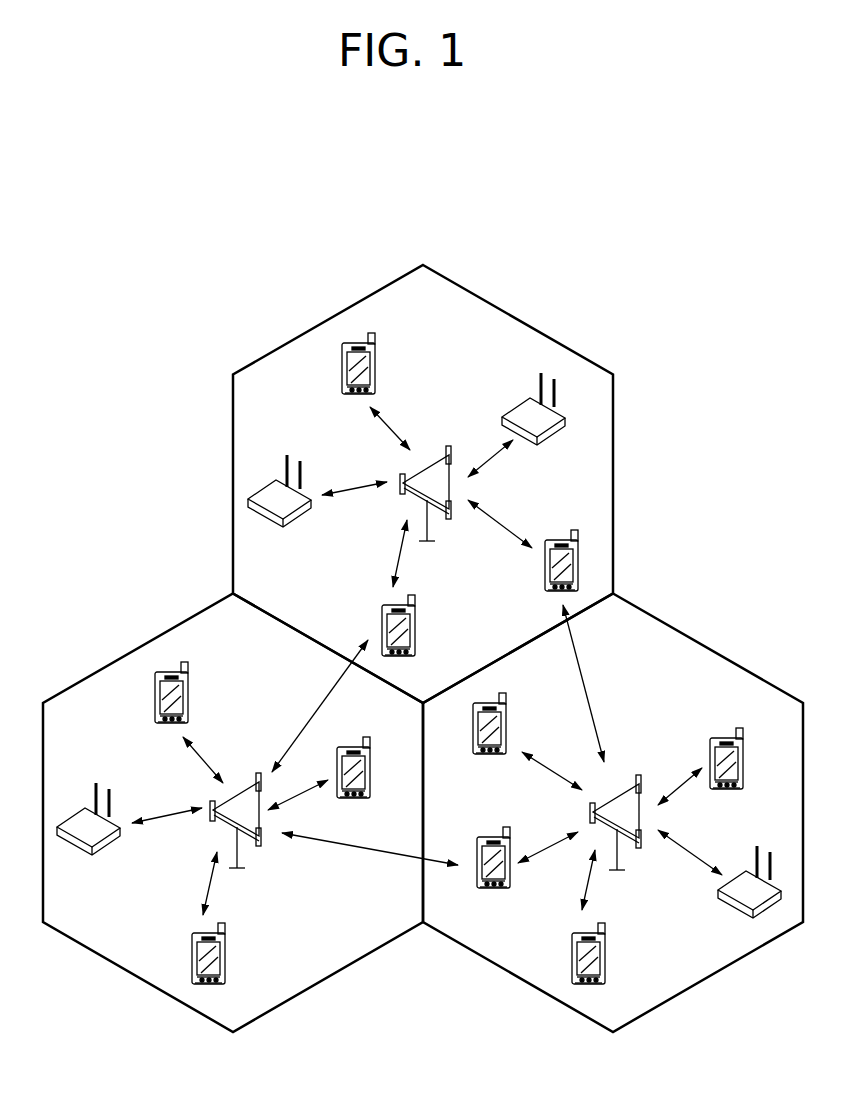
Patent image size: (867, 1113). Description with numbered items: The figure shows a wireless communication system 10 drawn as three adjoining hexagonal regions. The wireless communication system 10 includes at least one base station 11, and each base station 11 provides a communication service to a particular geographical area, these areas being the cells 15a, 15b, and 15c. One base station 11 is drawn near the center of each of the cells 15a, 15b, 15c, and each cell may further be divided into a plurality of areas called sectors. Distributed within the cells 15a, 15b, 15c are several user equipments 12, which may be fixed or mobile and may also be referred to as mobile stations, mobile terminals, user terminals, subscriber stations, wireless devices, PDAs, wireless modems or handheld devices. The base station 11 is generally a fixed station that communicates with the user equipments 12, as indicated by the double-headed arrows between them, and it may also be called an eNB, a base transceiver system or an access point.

The wireless communication system 10 is at (697, 378).
The base station 11 is at (440, 452).
The user equipment 12 is at (375, 365).
The cell 15a is at (613, 470).
The cell 15b is at (733, 660).
The cell 15c is at (113, 660).